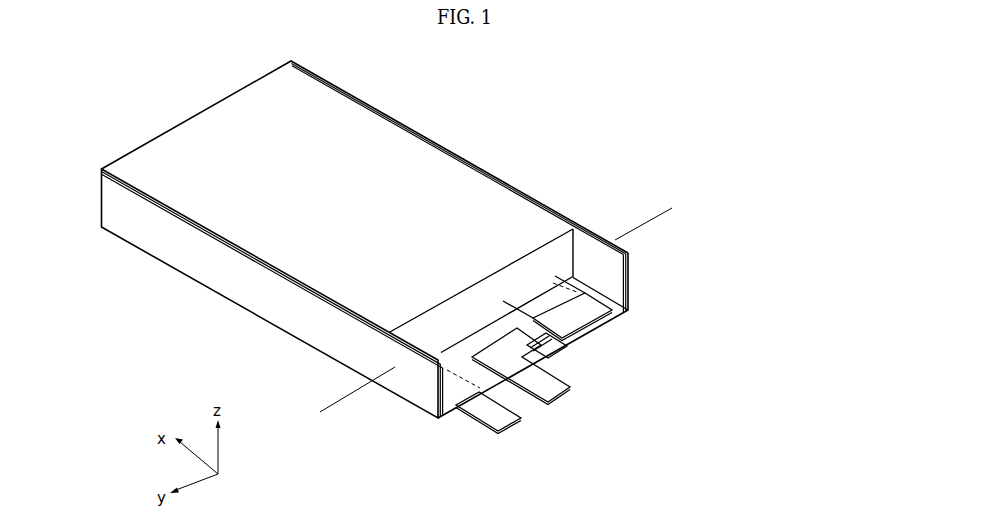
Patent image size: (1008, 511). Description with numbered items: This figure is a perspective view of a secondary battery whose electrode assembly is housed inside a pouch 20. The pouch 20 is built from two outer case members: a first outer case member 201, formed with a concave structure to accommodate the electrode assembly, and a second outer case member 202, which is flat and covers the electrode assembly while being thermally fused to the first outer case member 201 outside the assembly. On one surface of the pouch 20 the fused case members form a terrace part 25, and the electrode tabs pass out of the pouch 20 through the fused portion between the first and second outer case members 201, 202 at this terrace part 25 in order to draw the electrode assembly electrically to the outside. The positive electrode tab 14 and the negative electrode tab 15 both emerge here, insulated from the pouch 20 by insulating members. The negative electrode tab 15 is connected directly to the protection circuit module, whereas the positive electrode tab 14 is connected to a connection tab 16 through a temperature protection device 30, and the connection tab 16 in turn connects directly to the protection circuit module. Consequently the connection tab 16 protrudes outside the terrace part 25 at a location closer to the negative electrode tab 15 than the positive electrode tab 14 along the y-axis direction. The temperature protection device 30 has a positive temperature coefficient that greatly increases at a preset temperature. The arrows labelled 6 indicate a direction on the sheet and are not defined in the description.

The pouch 20 is at (365, 239).
The first outer case member 201 is at (207, 197).
The second outer case member 202 is at (110, 310).
The temperature protection device 30 is at (572, 353).
The first electrode tab 14 is at (590, 313).
The connection tab 16 is at (552, 388).
The terrace part 25 is at (522, 386).
The second electrode tab 15 is at (487, 405).
The direction arrow 6 is at (672, 208).